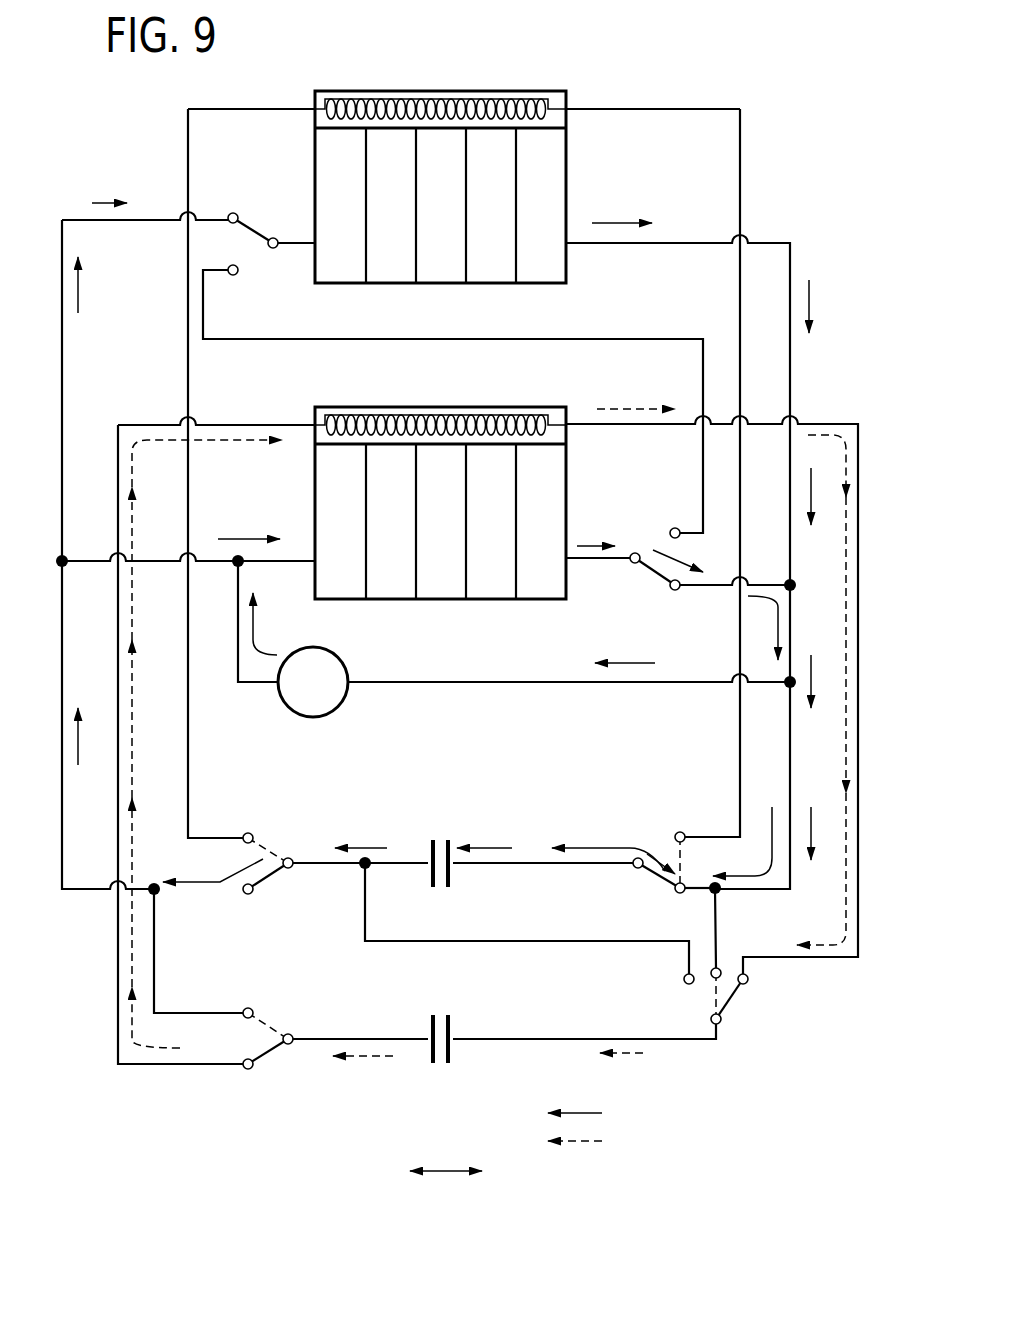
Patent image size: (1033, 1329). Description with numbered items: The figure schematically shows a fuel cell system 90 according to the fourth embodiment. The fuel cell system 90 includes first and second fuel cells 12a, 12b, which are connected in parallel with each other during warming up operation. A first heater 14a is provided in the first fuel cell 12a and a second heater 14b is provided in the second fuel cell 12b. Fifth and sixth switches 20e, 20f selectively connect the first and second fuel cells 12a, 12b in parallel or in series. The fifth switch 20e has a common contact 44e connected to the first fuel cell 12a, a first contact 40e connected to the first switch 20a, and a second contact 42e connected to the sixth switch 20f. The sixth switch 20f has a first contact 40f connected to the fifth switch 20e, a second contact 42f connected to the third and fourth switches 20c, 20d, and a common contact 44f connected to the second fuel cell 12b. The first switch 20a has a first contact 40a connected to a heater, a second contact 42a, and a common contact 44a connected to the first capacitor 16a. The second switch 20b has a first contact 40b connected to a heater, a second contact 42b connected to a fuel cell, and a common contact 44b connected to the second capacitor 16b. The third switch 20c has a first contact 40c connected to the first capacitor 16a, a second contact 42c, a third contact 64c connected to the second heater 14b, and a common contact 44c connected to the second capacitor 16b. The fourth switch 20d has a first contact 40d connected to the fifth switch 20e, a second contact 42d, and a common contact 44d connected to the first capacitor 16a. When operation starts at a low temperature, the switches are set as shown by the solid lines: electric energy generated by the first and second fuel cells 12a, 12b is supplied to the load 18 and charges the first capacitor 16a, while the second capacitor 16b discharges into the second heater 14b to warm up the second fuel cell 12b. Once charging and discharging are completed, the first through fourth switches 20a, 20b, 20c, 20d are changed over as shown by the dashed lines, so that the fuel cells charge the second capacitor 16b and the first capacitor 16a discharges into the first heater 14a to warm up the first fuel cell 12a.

The fuel cell system 90 is at (108, 117).
The first fuel cell 12a is at (568, 166).
The second fuel cell 12b is at (481, 481).
The first heater 14a is at (383, 97).
The second heater 14b is at (440, 399).
The first capacitor 16a is at (440, 890).
The second capacitor 16b is at (440, 1065).
The load 18 is at (299, 717).
The first switch 20a is at (280, 864).
The second switch 20b is at (286, 1040).
The third switch 20c is at (716, 981).
The fourth switch 20d is at (650, 863).
The fifth switch 20e is at (260, 243).
The sixth switch 20f is at (646, 558).
The first contact of first switch 40a is at (248, 833).
The first contact of second switch 40b is at (248, 1008).
The first contact of third switch 40c is at (684, 979).
The first contact of fourth switch 40d is at (680, 832).
The first contact of fifth switch 40e is at (233, 213).
The first contact of sixth switch 40f is at (677, 528).
The second contact of first switch 42a is at (248, 894).
The second contact of second switch 42b is at (248, 1069).
The second contact of third switch 42c is at (718, 967).
The second contact of fourth switch 42d is at (680, 893).
The second contact of fifth switch 42e is at (233, 275).
The second contact of sixth switch 42f is at (675, 590).
The common contact of first switch 44a is at (288, 868).
The common contact of second switch 44b is at (290, 1044).
The common contact of third switch 44c is at (721, 1019).
The common contact of fourth switch 44d is at (637, 868).
The common contact of fifth switch 44e is at (273, 248).
The common contact of sixth switch 44f is at (635, 563).
The third contact of third switch 64c is at (748, 979).